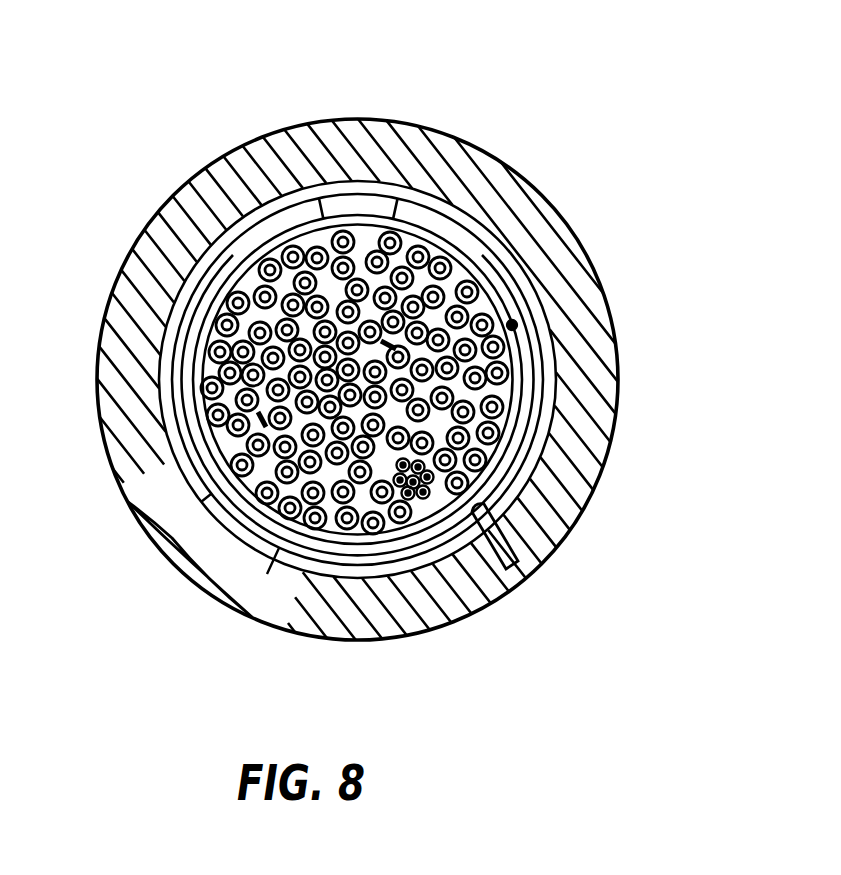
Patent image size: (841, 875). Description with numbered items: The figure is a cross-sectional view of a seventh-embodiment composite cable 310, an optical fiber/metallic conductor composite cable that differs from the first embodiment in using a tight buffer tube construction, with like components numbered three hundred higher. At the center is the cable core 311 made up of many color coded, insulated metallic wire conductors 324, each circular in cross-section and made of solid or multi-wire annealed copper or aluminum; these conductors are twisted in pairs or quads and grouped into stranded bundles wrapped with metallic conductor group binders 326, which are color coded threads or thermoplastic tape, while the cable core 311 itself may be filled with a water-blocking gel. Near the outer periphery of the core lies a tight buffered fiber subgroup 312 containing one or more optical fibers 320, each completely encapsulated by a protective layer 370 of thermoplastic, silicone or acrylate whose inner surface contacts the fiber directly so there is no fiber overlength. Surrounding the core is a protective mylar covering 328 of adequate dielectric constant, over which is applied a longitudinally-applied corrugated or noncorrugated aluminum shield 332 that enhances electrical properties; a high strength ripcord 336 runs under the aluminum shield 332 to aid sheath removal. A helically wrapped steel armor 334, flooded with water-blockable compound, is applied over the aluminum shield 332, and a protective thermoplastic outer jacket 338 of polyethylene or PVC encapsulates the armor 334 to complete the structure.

The composite cable 310 is at (160, 176).
The outer jacket 338 is at (440, 150).
The steel armor 334 is at (453, 210).
The aluminum shield 332 is at (473, 250).
The mylar covering 328 is at (486, 288).
The ripcord 336 is at (514, 323).
The cable core 311 is at (508, 377).
The insulated metallic wire conductor 324 is at (480, 418).
The tight buffered fiber subgroup 312 is at (536, 562).
The encapsulating layer 370 is at (428, 480).
The optical fiber 320 is at (413, 487).
The metallic conductor group binder 326 is at (255, 432).